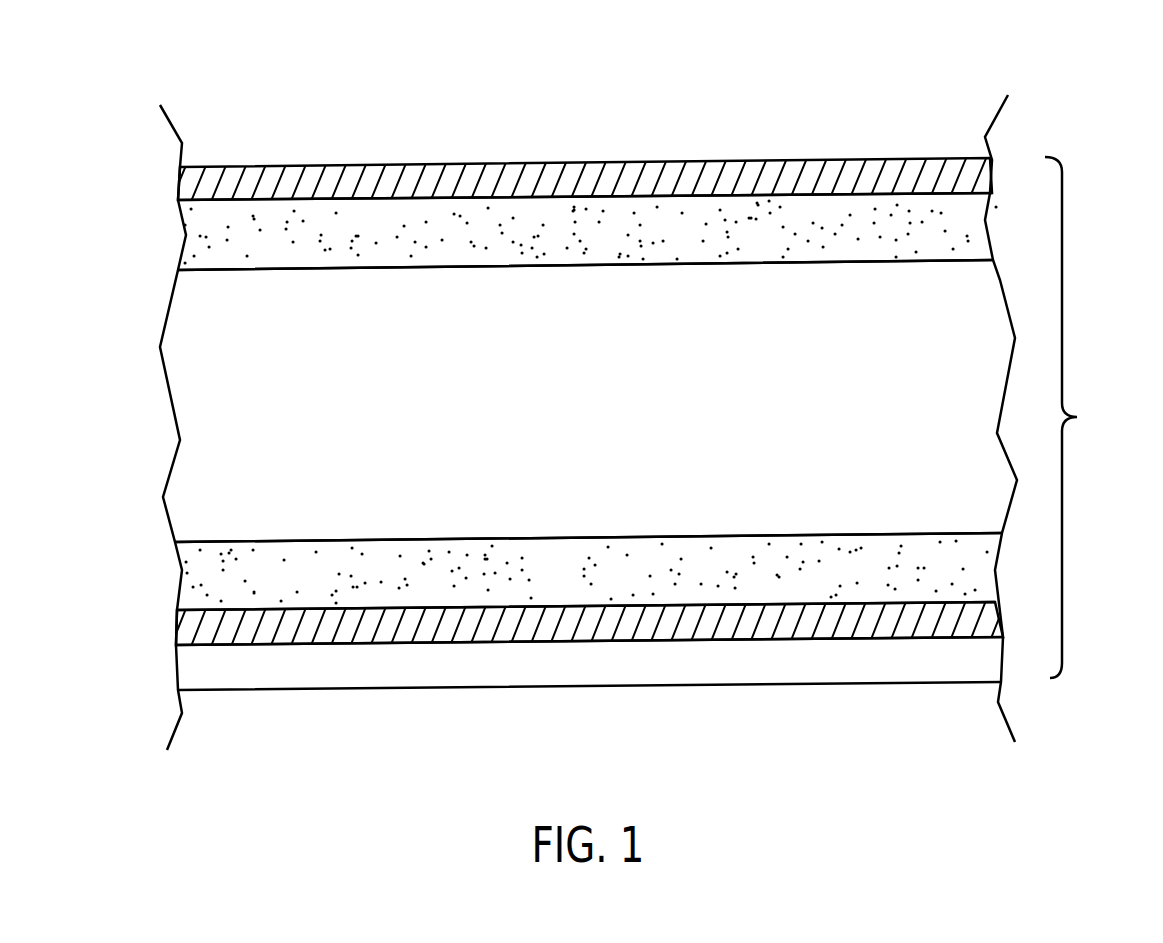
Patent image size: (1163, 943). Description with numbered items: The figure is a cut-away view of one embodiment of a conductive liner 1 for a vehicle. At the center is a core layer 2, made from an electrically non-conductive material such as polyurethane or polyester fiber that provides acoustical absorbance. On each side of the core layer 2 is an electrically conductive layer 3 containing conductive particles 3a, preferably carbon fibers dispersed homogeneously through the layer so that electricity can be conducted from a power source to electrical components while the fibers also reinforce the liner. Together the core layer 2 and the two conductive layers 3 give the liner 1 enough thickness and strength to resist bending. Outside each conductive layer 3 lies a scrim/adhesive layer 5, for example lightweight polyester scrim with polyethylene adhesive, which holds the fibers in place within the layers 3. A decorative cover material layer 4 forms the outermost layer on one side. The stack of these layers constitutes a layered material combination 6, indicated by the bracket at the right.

The conductive liner 1 is at (1066, 99).
The core layer 2 is at (598, 410).
The electrically conductive layer 3 is at (211, 238).
The conductive particles 3a is at (250, 262).
The cover material layer 4 is at (206, 672).
The scrim/adhesive layer 5 is at (170, 183).
The layered material combination 6 is at (1073, 417).